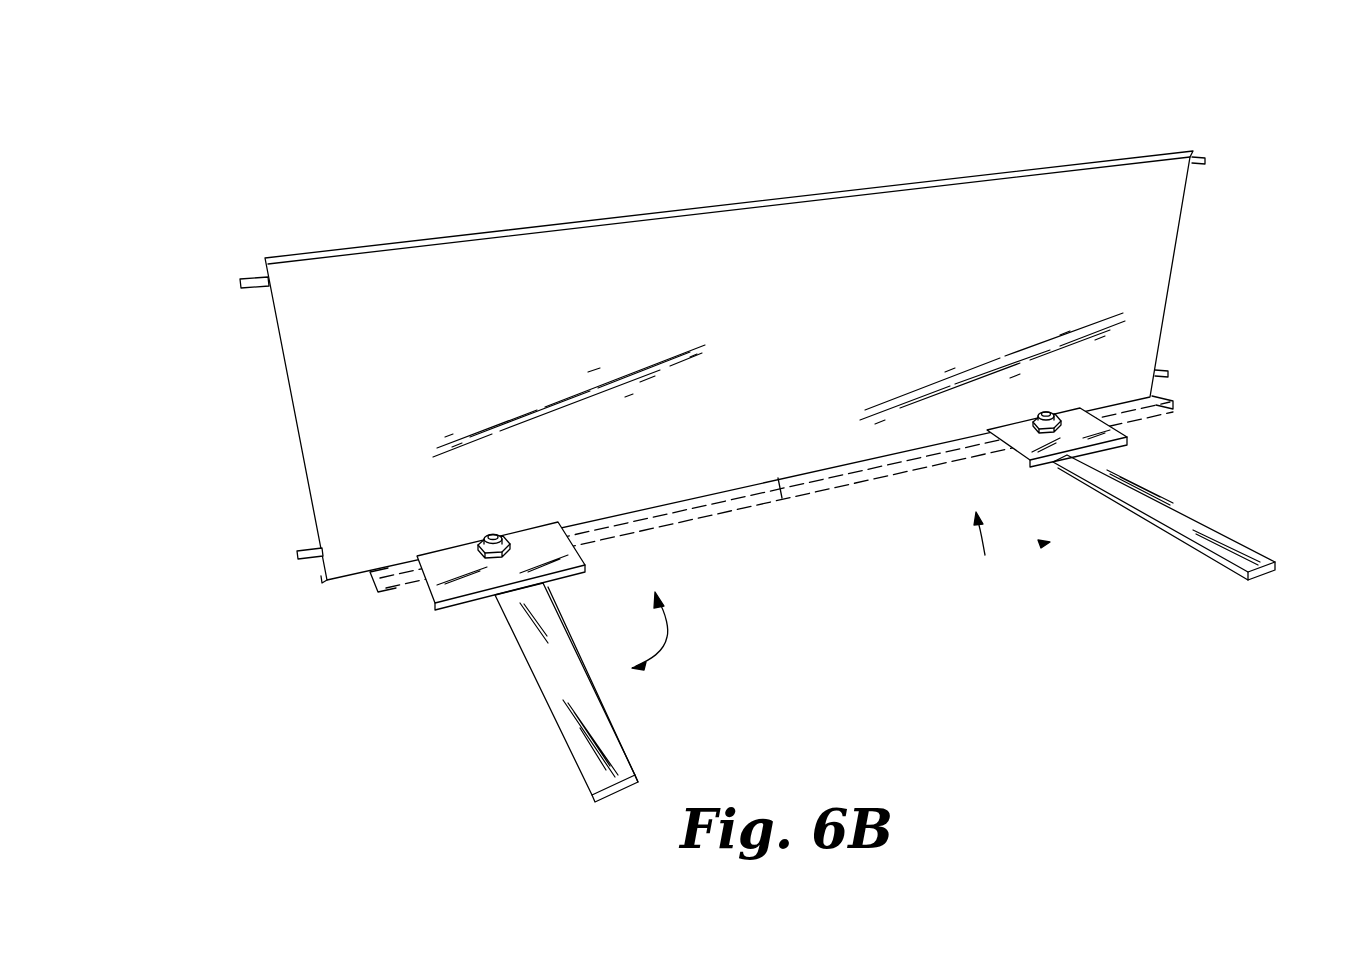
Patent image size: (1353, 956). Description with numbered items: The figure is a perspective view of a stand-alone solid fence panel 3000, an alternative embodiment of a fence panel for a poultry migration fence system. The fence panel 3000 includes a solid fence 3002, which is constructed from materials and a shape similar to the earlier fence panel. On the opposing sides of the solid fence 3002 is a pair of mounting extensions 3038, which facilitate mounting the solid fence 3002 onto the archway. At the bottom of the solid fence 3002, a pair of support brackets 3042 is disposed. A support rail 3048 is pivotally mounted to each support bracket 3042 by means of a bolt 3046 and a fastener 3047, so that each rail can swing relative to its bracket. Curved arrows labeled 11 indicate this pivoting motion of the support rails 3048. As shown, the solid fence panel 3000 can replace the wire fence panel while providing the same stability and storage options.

The solid fence panel 3000 is at (860, 150).
The solid fence 3002 is at (563, 295).
The mounting extensions 3038 is at (252, 274).
The support brackets 3042 is at (472, 587).
The bolt 3046 is at (497, 534).
The fastener 3047 is at (507, 546).
The support rail 3048 is at (592, 760).
The view direction arrow 11 is at (667, 637).